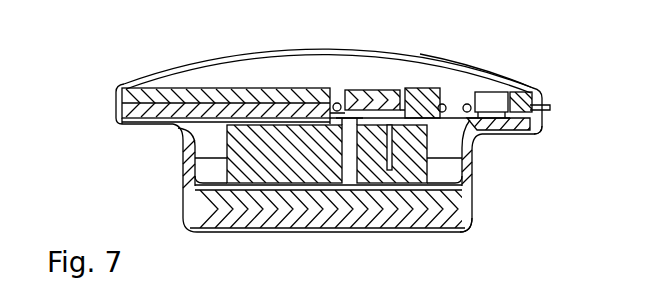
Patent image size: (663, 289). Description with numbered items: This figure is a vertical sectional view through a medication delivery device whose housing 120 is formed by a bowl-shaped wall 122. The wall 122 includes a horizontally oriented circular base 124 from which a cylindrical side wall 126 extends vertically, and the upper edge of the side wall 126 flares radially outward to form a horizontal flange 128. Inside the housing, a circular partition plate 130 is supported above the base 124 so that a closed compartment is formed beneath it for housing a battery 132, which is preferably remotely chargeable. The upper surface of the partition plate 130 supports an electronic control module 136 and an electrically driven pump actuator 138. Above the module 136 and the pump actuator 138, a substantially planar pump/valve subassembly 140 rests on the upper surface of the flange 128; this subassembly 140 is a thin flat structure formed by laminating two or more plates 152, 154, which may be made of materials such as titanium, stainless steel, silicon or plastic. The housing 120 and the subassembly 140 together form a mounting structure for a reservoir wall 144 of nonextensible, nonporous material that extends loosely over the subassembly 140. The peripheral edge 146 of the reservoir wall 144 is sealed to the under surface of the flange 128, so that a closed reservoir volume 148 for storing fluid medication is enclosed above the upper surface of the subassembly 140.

The housing 120 is at (174, 207).
The bowl-shaped wall 122 is at (472, 197).
The circular base 124 is at (352, 233).
The cylindrical side wall 126 is at (472, 187).
The horizontal flange 128 is at (543, 128).
The partition plate 130 is at (242, 188).
The battery 132 is at (466, 231).
The electronic control module 136 is at (235, 138).
The pump actuator 138 is at (425, 142).
The pump/valve subassembly 140 is at (376, 88).
The reservoir wall 144 is at (447, 63).
The peripheral edge 146 is at (138, 132).
The reservoir volume 148 is at (200, 72).
The plate 152 is at (128, 88).
The plate 154 is at (128, 108).